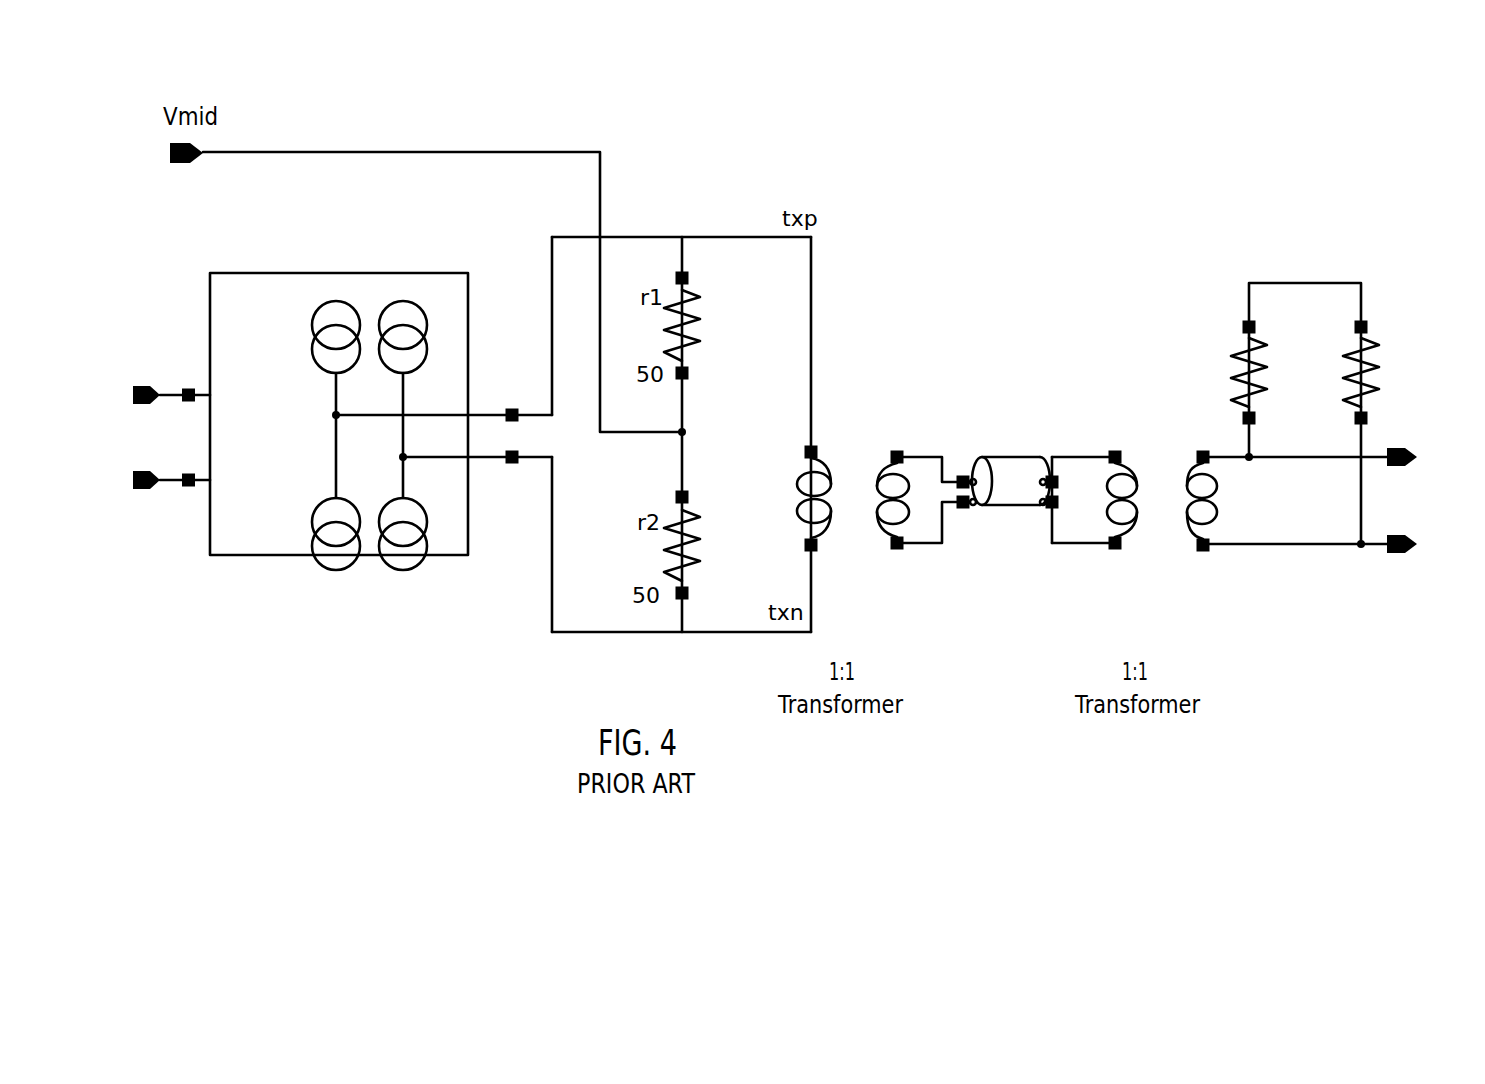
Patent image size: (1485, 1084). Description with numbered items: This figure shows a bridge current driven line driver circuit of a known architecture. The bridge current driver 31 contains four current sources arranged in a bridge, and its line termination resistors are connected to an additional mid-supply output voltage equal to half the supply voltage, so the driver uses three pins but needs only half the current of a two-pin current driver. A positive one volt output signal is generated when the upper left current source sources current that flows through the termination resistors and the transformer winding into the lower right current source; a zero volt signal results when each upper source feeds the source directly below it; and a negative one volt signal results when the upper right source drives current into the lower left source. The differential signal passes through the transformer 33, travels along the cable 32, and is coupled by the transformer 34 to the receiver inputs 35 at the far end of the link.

The bridge current driver 31 is at (445, 273).
The cable 32 is at (1009, 508).
The transformer 33 is at (852, 536).
The transformer 34 is at (1165, 533).
The receiver inputs 35 is at (1379, 553).